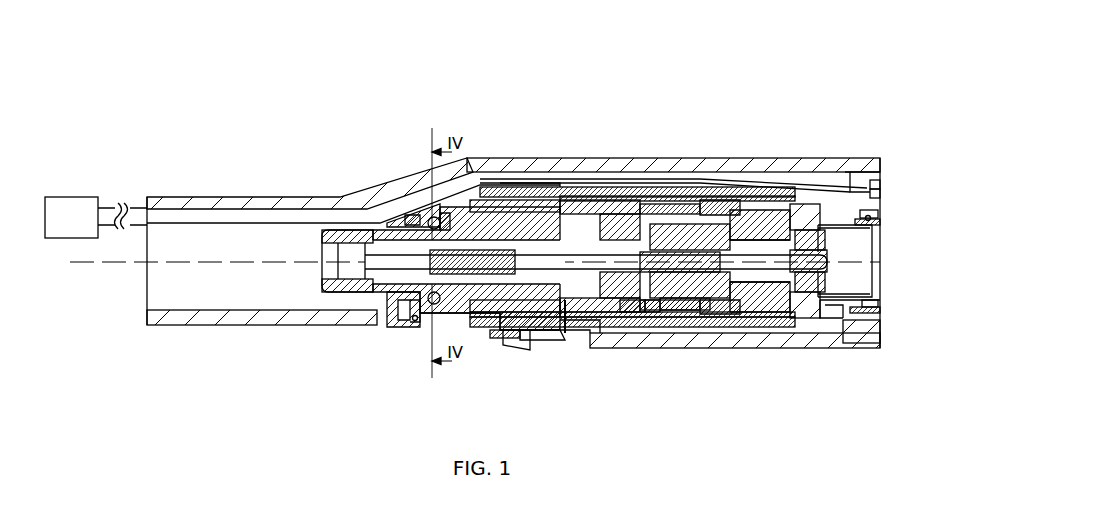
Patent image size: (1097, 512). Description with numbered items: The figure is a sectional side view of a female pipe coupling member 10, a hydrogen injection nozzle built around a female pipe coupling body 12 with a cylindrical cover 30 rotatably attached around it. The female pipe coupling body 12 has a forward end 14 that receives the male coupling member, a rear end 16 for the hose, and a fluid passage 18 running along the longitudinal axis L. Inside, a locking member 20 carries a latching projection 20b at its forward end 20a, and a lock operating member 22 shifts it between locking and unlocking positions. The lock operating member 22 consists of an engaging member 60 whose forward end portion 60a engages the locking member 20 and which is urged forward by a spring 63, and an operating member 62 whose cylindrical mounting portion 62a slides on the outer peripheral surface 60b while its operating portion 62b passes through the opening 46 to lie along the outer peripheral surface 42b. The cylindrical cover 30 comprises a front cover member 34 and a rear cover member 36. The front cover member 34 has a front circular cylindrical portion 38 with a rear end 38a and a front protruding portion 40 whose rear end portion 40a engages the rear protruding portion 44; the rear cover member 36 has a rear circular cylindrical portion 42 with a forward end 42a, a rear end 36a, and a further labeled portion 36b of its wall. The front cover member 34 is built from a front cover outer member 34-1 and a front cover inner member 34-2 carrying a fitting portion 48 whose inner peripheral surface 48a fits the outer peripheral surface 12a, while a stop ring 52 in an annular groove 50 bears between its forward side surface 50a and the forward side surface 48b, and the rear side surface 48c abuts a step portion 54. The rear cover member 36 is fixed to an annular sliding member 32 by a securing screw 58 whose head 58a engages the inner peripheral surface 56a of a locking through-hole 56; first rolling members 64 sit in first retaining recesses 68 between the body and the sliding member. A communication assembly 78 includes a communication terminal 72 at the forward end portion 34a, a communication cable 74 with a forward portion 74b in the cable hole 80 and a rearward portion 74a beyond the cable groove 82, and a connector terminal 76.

The female pipe coupling member 10 is at (692, 72).
The female pipe coupling body 12 is at (594, 176).
The outer peripheral surface 12a is at (845, 262).
The forward end 14 is at (882, 292).
The rear end 16 is at (330, 292).
The fluid passage 18 is at (790, 320).
The locking member 20 is at (751, 203).
The forward end of the locking member 20a is at (747, 208).
The latching projection 20b is at (790, 208).
The lock operating member 22 is at (665, 334).
The cylindrical cover 30 is at (458, 70).
The annular sliding member 32 is at (452, 212).
The front cover member 34 is at (690, 208).
The forward end portion of the front cover member 34a is at (875, 168).
The front cover outer member 34-1 is at (880, 165).
The front cover inner member 34-2 is at (880, 182).
The rear cover member 36 is at (334, 233).
The rear end of the rear cover member 36a is at (147, 205).
The sleeve channel 36b is at (230, 218).
The front circular cylindrical portion 38 is at (757, 330).
The rear end of the front circular cylindrical portion 38a is at (576, 332).
The front protruding portion 40 is at (632, 211).
The rear end portion of the front protruding portion 40a is at (520, 185).
The rear circular cylindrical portion 42 is at (270, 320).
The forward end of the rear circular cylindrical portion 42a is at (556, 330).
The outer peripheral surface of the rear circular cylindrical portion 42b is at (500, 338).
The rear protruding portion 44 is at (432, 217).
The opening 46 is at (567, 338).
The fitting portion 48 is at (864, 362).
The inner peripheral surface of the fitting portion 48a is at (852, 330).
The forward side surface of the fitting portion 48b is at (872, 310).
The rear side surface of the fitting portion 48c is at (833, 320).
The annular groove 50 is at (878, 210).
The forward side surface of the annular groove 50a is at (875, 224).
The stop ring 52 is at (874, 217).
The step portion 54 is at (808, 322).
The locking through-hole 56 is at (413, 350).
The inner peripheral surface of the locking through-hole 56a is at (415, 326).
The securing screw 58 is at (366, 346).
The head of the securing screw 58a is at (402, 306).
The engaging member 60 is at (687, 322).
The forward end portion of the engaging member 60a is at (690, 330).
The outer peripheral surface of the engaging member 60b is at (652, 322).
The operating member 62 is at (627, 317).
The cylindrical mounting portion 62a is at (626, 320).
The operating portion 62b is at (528, 338).
The spring 63 is at (660, 202).
The first rolling members 64 is at (440, 215).
The first retaining recesses 68 is at (410, 222).
The communication terminal 72 is at (862, 168).
The communication cable 74 is at (556, 140).
The rearward portion of the communication cable 74a is at (272, 214).
The forward portion of the communication cable 74b is at (805, 180).
The connector terminal 76 is at (72, 207).
The communication assembly 78 is at (585, 198).
The cable hole 80 is at (685, 186).
The cable groove 82 is at (493, 198).
The longitudinal axis L is at (85, 264).